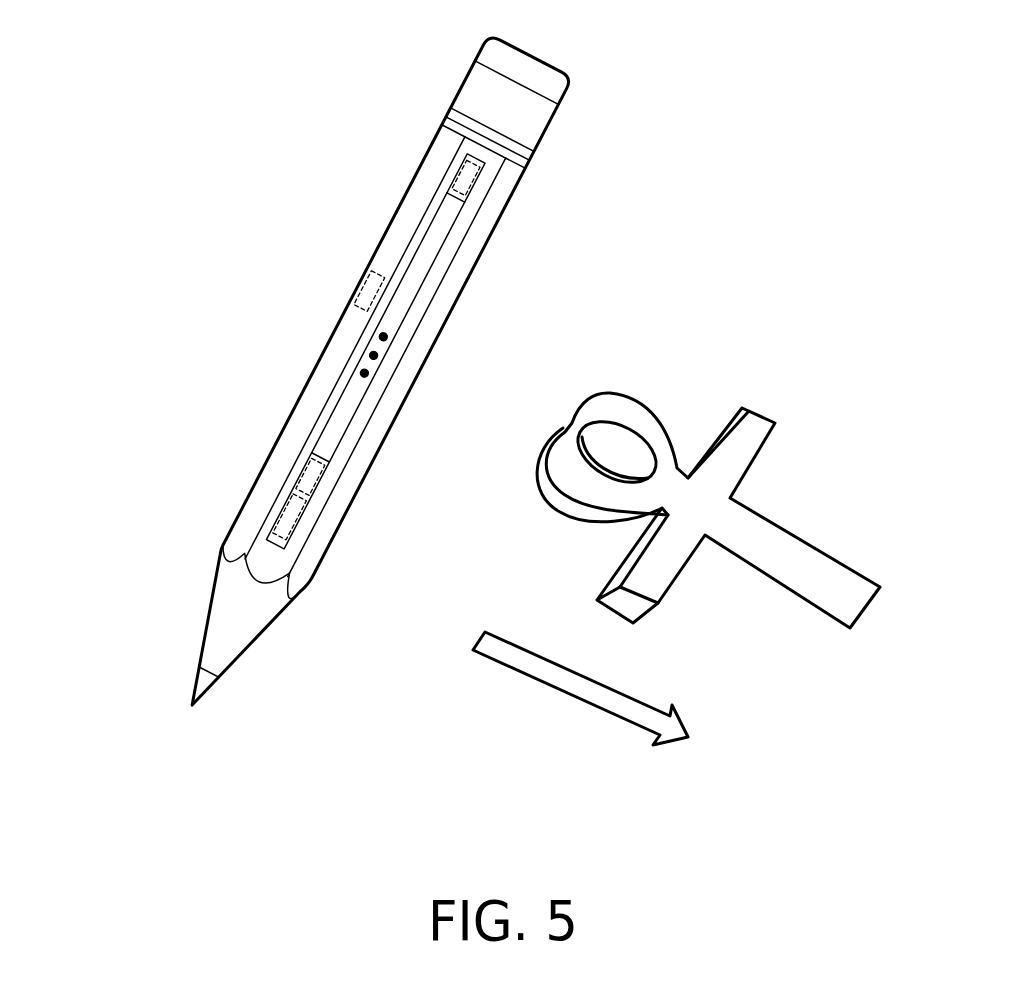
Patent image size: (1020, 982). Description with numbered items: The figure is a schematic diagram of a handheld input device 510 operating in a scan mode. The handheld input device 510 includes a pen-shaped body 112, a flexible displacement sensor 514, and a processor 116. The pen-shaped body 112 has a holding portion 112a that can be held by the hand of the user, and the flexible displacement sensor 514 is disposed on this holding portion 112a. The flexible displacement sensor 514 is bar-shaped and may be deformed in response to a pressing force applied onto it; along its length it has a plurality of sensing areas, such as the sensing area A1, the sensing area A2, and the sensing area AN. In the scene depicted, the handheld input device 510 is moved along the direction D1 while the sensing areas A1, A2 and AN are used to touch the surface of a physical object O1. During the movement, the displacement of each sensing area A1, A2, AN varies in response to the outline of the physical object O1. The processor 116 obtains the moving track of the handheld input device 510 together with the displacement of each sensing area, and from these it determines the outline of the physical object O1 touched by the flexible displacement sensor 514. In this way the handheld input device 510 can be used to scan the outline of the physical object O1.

The handheld input device 510 is at (186, 552).
The pen-shaped body 112 is at (448, 138).
The holding portion 112a is at (413, 377).
The flexible displacement sensor 514 is at (428, 240).
The sensing area AN is at (455, 180).
The processor 116 is at (362, 287).
The sensing area A2 is at (282, 477).
The sensing area A1 is at (283, 514).
The physical object O1 is at (747, 437).
The direction D1 is at (580, 688).